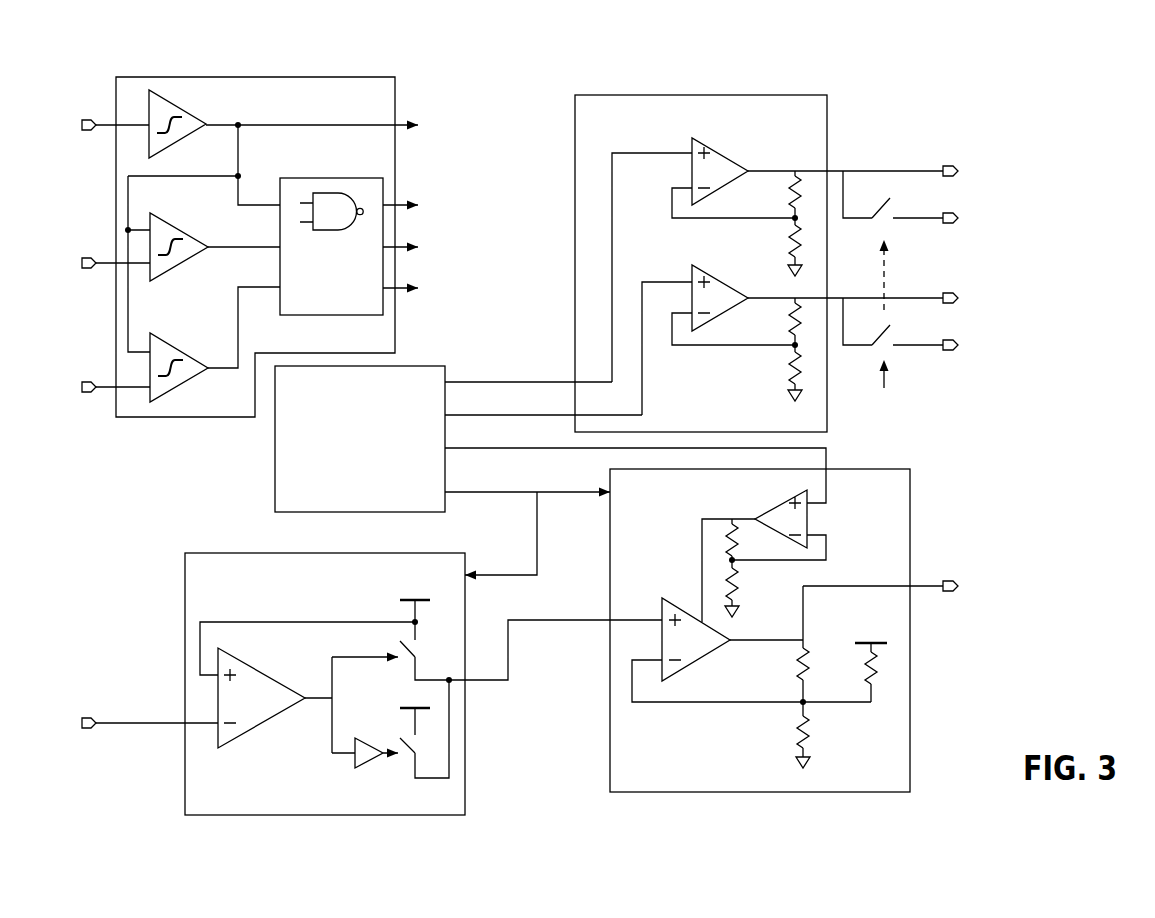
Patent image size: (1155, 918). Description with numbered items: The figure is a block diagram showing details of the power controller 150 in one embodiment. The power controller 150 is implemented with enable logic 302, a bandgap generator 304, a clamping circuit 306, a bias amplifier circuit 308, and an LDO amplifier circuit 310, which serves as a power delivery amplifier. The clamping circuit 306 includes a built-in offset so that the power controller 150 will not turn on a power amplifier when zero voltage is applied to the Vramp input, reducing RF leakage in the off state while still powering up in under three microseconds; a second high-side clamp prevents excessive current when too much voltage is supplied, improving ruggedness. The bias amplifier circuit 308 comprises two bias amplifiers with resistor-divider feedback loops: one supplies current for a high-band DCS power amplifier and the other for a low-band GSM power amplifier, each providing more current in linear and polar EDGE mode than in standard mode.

The power controller 150 is at (88, 39).
The enable logic 302 is at (362, 77).
The bandgap generator 304 is at (275, 468).
The clamping circuit 306 is at (465, 796).
The bias amplifier circuit 308 is at (752, 95).
The LDO amplifier circuit 310 is at (910, 763).